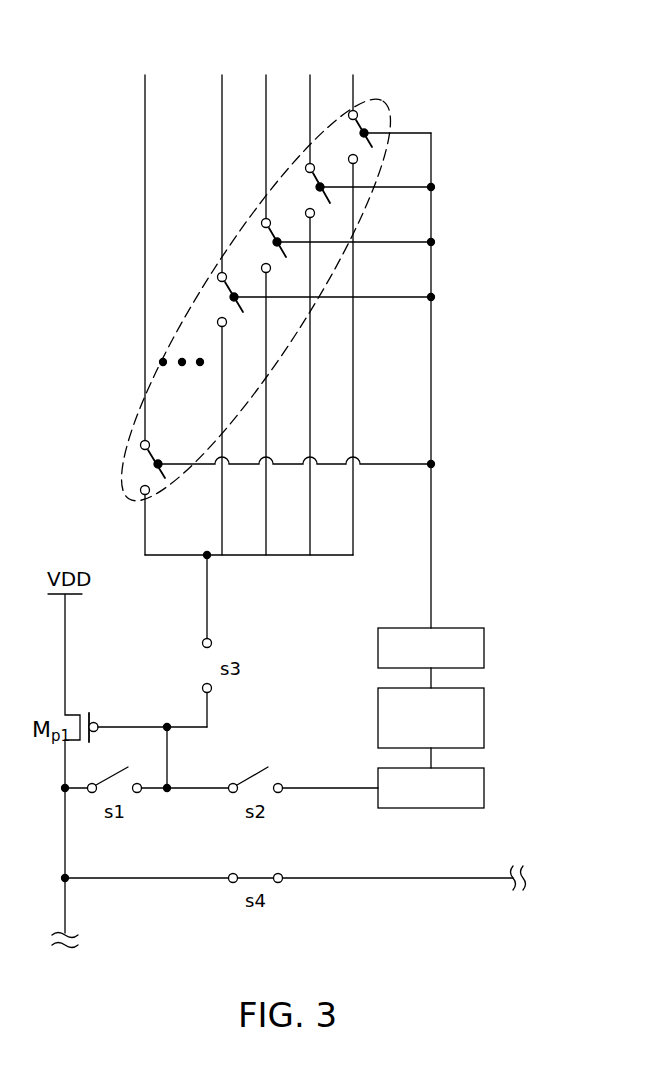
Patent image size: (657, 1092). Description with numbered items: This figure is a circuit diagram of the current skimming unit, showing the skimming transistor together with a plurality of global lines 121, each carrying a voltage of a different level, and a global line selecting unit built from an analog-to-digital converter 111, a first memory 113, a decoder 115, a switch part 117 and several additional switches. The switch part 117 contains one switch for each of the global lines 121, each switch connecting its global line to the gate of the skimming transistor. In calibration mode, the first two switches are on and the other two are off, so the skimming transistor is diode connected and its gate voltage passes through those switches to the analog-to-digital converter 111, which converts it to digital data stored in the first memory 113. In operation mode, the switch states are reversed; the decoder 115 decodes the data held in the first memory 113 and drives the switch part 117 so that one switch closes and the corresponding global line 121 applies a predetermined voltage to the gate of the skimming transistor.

The global lines 121 is at (353, 73).
The switch part 117 is at (373, 103).
The decoder 115 is at (488, 646).
The first memory 113 is at (488, 706).
The analog-to-digital converter 111 is at (488, 787).